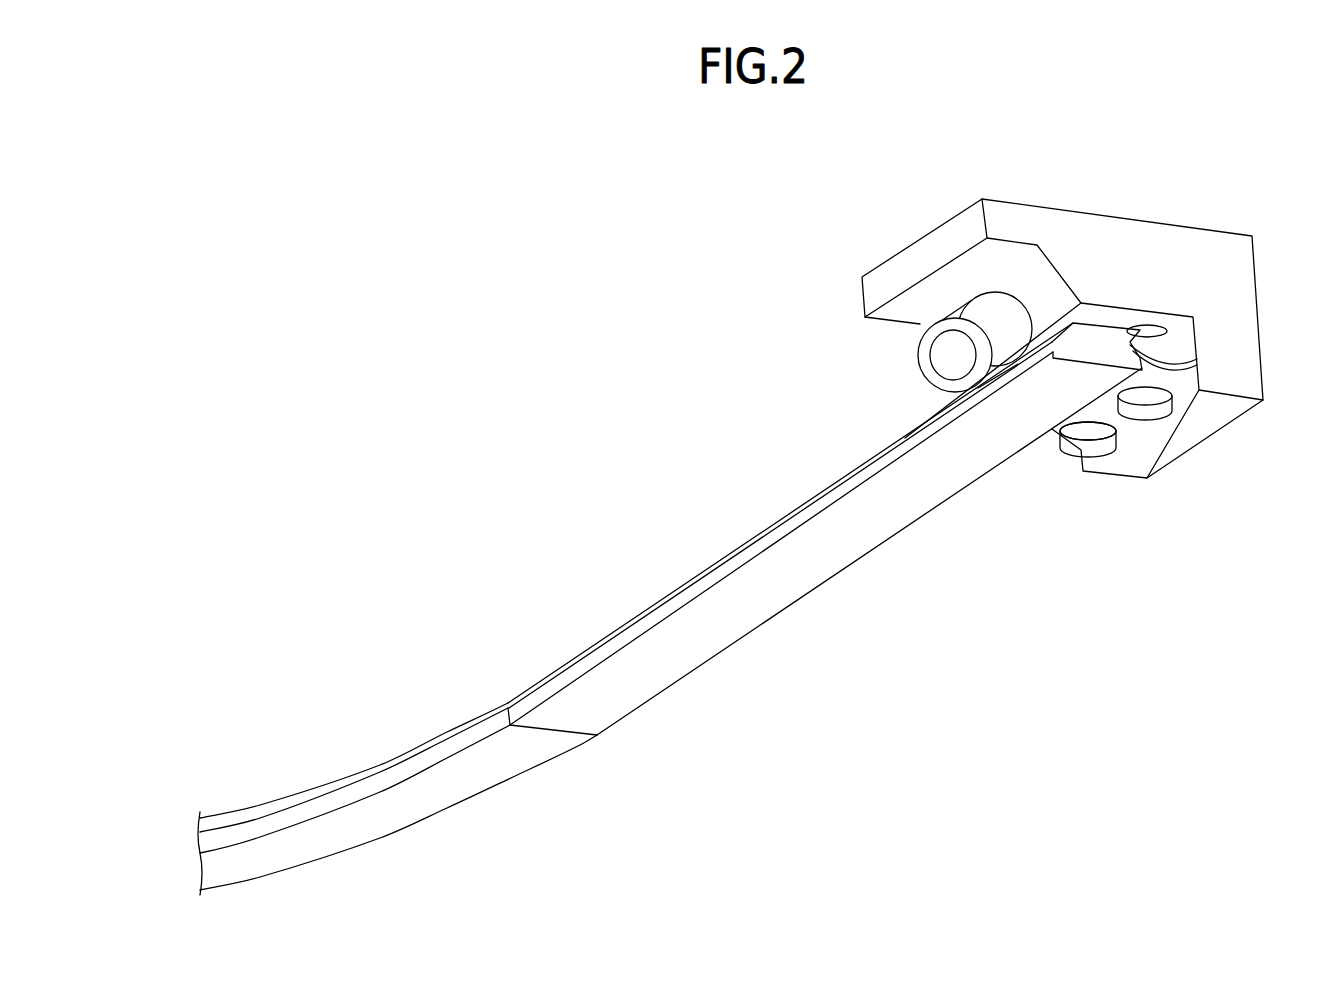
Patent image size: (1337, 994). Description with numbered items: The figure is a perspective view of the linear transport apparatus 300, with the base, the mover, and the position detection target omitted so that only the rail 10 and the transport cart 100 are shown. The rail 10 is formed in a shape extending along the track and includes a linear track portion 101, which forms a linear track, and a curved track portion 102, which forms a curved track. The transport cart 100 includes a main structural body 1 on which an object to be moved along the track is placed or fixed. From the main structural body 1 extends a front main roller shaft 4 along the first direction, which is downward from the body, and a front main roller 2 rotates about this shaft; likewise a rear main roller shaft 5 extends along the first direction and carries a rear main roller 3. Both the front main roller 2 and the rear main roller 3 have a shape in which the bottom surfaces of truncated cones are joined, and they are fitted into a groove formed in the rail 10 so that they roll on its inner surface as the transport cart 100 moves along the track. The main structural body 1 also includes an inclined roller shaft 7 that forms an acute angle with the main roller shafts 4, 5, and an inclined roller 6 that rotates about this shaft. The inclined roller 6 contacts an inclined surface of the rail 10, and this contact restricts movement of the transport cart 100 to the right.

The main structural body 1 is at (1245, 258).
The front main roller 2 is at (1065, 438).
The rear main roller 3 is at (1183, 378).
The front main roller shaft 4 is at (1089, 444).
The rear main roller shaft 5 is at (1146, 412).
The inclined roller 6 is at (960, 307).
The inclined roller shaft 7 is at (1005, 320).
The rail 10 is at (584, 688).
The transport cart 100 is at (1251, 428).
The linear track portion 101 is at (690, 662).
The curved track portion 102 is at (341, 842).
The linear transport apparatus 300 is at (1195, 163).